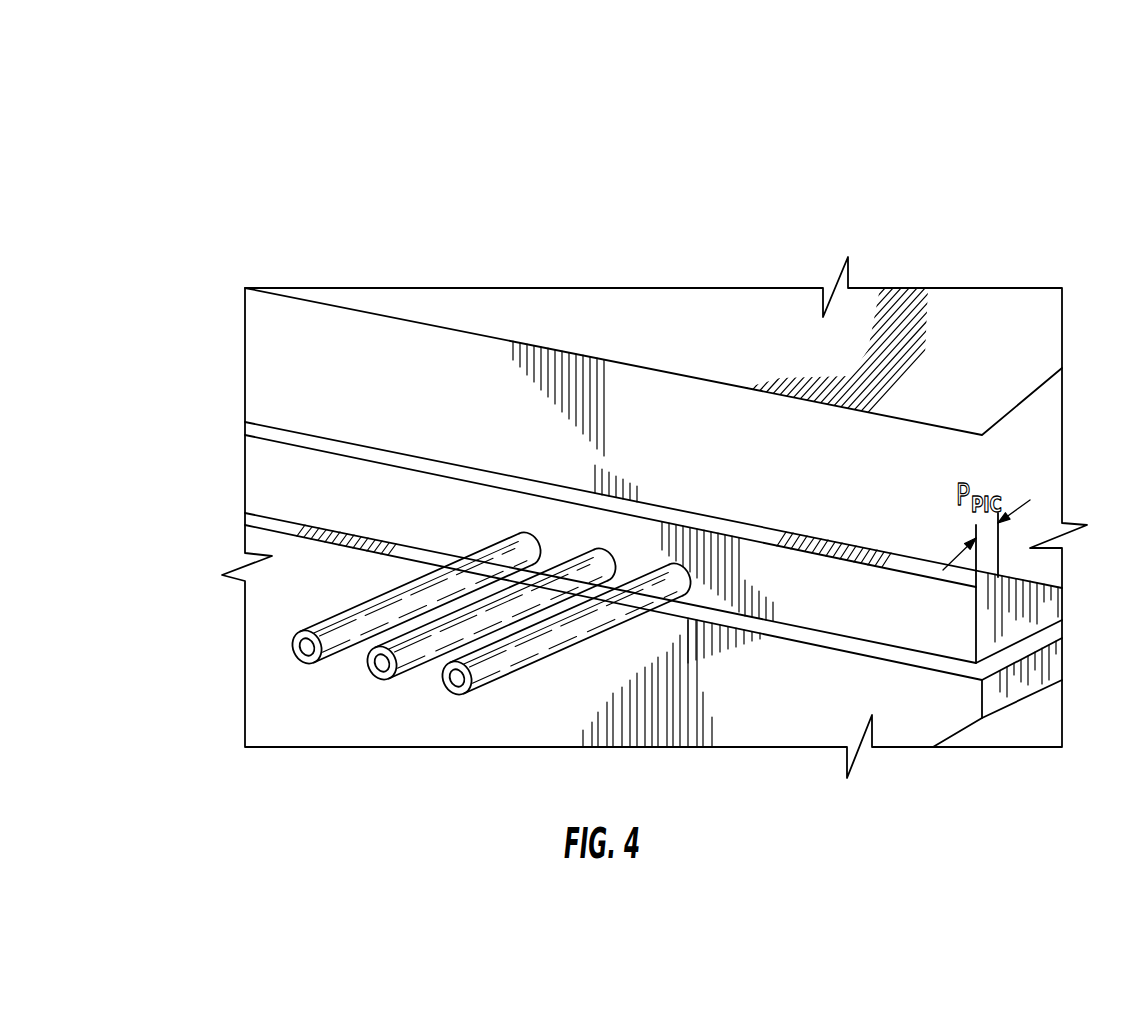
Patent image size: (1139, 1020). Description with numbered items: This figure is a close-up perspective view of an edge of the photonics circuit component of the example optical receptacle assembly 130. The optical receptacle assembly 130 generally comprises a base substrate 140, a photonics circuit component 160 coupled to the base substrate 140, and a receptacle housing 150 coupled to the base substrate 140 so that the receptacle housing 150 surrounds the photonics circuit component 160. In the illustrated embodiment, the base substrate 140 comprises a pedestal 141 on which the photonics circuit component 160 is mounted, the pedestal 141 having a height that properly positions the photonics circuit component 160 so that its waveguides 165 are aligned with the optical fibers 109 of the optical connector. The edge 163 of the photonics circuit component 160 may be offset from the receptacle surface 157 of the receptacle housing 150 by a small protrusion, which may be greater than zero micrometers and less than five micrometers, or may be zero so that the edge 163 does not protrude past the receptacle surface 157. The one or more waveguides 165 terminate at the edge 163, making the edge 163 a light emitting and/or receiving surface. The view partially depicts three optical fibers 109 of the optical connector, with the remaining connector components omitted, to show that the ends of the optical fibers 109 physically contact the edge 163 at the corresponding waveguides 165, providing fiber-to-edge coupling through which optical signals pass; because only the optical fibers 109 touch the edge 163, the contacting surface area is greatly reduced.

The optical receptacle assembly 130 is at (1023, 183).
The receptacle housing 150 is at (282, 359).
The receptacle surface 157 is at (343, 355).
The photonics circuit component 160 is at (292, 488).
The edge 163 is at (407, 513).
The base substrate 140 is at (232, 560).
The pedestal 141 is at (770, 687).
The optical fibers 109 is at (340, 620).
The waveguides 165 is at (523, 530).